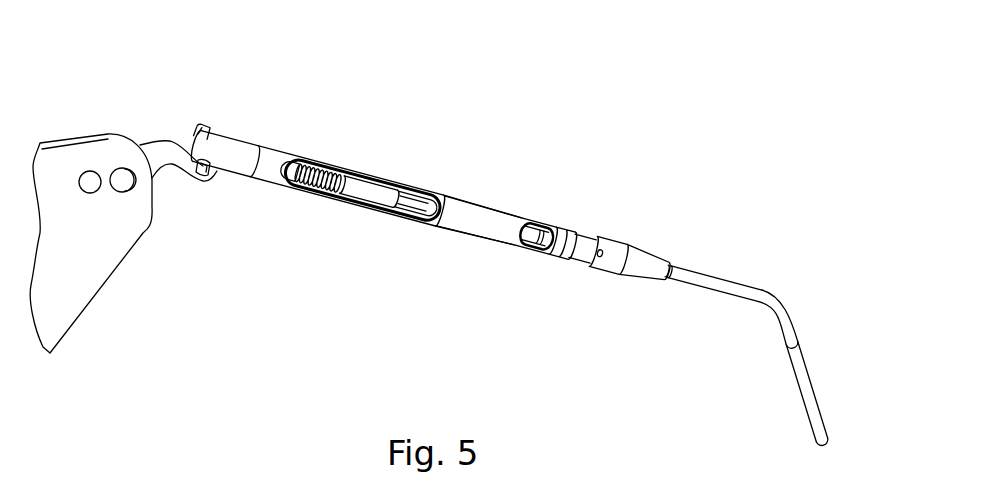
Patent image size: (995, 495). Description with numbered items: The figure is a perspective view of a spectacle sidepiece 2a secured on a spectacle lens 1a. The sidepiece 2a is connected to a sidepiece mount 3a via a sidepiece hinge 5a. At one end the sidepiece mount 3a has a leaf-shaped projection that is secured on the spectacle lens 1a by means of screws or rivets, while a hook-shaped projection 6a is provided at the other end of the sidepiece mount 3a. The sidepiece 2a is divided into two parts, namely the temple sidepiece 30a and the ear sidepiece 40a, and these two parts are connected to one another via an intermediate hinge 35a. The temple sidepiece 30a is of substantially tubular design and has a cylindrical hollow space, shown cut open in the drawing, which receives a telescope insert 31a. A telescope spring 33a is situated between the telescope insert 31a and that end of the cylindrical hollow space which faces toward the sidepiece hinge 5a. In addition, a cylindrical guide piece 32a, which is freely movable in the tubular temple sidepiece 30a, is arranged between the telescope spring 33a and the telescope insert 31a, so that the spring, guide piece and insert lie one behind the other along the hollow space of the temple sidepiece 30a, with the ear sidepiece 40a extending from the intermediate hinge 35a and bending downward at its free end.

The spectacle lens 1a is at (82, 153).
The sidepiece 2a is at (480, 245).
The sidepiece mount 3a is at (170, 160).
The sidepiece hinge 5a is at (257, 123).
The hook-shaped projection 6a is at (222, 175).
The temple sidepiece 30a is at (480, 213).
The telescope insert 31a is at (413, 202).
The cylindrical guide piece 32a is at (365, 188).
The telescope spring 33a is at (330, 163).
The intermediate hinge 35a is at (628, 240).
The ear sidepiece 40a is at (803, 387).